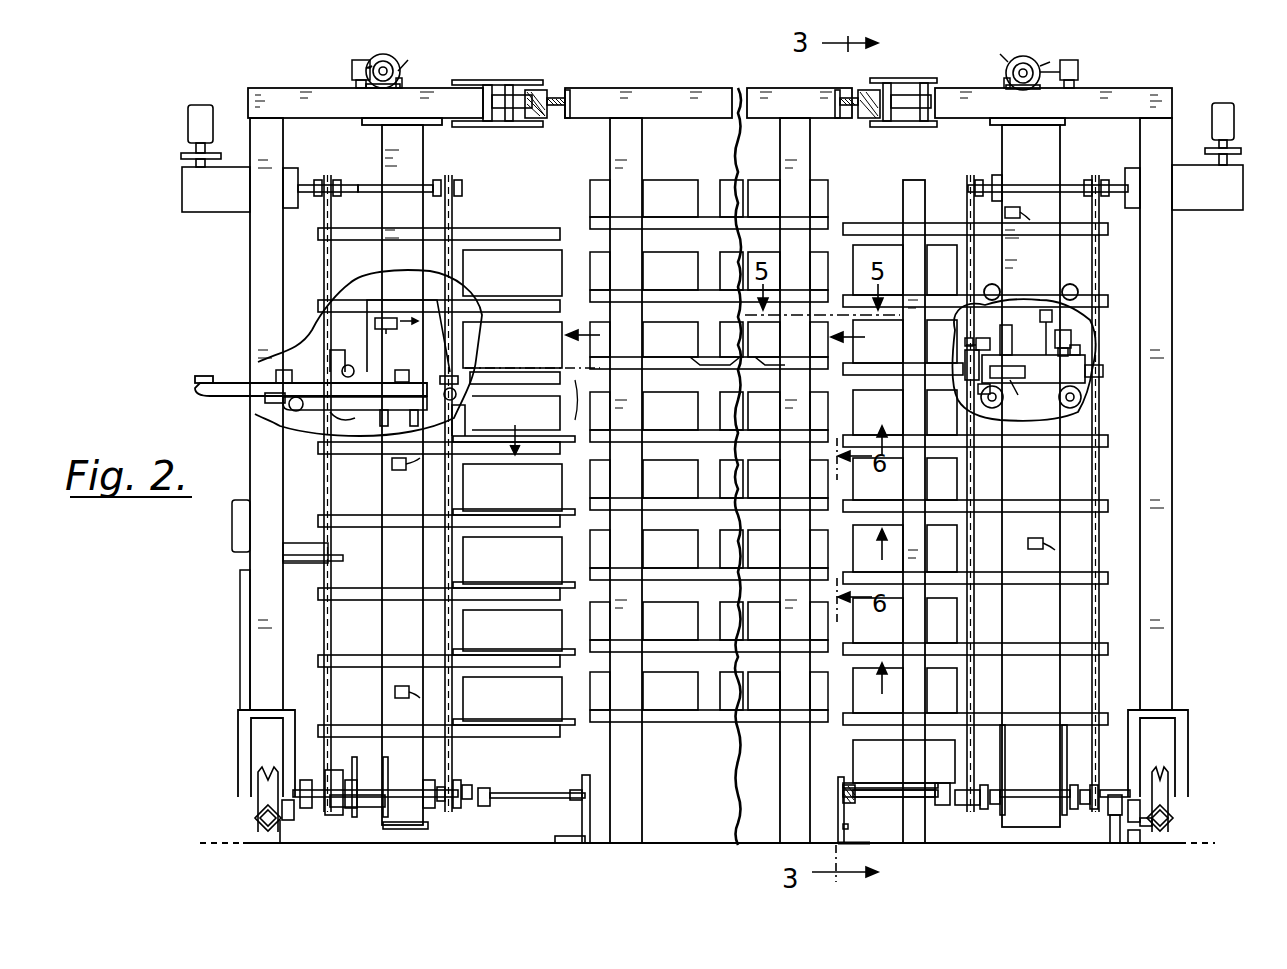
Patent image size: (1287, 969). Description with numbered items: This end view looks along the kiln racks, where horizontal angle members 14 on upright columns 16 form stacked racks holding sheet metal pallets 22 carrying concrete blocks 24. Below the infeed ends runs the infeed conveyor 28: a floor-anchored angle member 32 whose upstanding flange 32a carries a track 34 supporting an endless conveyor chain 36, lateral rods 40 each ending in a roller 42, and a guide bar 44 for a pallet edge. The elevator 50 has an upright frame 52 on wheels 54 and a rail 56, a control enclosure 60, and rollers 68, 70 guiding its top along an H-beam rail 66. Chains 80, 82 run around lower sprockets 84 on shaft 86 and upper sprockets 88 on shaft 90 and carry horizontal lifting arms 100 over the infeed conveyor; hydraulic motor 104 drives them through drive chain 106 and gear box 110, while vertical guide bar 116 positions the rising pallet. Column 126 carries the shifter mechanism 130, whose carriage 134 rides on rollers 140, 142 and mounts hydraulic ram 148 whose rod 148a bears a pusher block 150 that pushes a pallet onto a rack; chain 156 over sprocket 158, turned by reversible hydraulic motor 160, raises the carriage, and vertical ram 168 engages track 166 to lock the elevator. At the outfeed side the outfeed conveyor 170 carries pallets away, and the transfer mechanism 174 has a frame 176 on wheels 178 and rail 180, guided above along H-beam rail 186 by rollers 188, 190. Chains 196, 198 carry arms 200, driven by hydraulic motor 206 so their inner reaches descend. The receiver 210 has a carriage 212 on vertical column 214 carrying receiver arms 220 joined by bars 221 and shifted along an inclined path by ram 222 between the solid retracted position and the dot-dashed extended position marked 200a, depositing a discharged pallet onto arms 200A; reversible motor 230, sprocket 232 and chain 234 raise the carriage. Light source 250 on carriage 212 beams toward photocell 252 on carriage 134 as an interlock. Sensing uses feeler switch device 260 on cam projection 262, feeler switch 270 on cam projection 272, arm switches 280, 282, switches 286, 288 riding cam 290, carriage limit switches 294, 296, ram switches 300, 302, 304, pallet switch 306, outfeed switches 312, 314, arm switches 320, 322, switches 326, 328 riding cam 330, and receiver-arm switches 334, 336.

The angle members 14 is at (826, 217).
The upright columns 16 is at (642, 150).
The pallets 22 is at (712, 368).
The concrete blocks 24 is at (678, 344).
The infeed conveyor 28 is at (878, 848).
The angle member 32 is at (866, 842).
The upstanding flange 32a is at (840, 840).
The track 34 is at (851, 803).
The conveyor chain 36 is at (850, 785).
The rods 40 is at (900, 798).
The roller 42 is at (942, 805).
The guide bar 44 is at (838, 778).
The elevator 50 is at (1196, 76).
The upright frame 52 is at (1138, 90).
The wheels 54 is at (1168, 800).
The rail 56 is at (1172, 822).
The enclosure 60 is at (1176, 497).
The H-beam rail 66 is at (852, 96).
The rollers 68 is at (866, 90).
The rollers 70 is at (928, 83).
The chain 80 is at (968, 280).
The chain 82 is at (1100, 241).
The sprockets 84 is at (976, 805).
The shaft 86 is at (1058, 798).
The sprockets 88 is at (968, 175).
The shaft 90 is at (1028, 186).
The lifting arms 100 is at (952, 218).
The hydraulic motor 104 is at (1223, 104).
The drive chain 106 is at (1228, 150).
The gear box 110 is at (1240, 198).
The guide bar 116 is at (905, 200).
The column 126 is at (1052, 140).
The shifter mechanism 130 is at (1120, 351).
The carriage 134 is at (1080, 378).
The rollers 140 is at (990, 408).
The rollers 142 is at (1071, 408).
The hydraulic ram 148 is at (1033, 369).
The rod 148a is at (970, 378).
The pusher block 150 is at (978, 392).
The chain 156 is at (1005, 82).
The sprocket 158 is at (1010, 62).
The reversible hydraulic motor 160 is at (1020, 56).
The track 166 is at (1114, 843).
The hydraulic ram 168 is at (1112, 815).
The outfeed conveyor 170 is at (527, 832).
The transfer mechanism 174 is at (193, 266).
The upright frame 176 is at (298, 90).
The wheels 178 is at (258, 800).
The rail 180 is at (257, 822).
The H-beam rail 186 is at (560, 96).
The rollers 188 is at (546, 90).
The rollers 190 is at (490, 80).
The chain 196 is at (455, 203).
The chain 198 is at (323, 212).
The arms 200 is at (516, 240).
The shelf edge 200a is at (472, 344).
The arms 200A is at (490, 376).
The hydraulic motor 206 is at (198, 106).
The receiver 210 is at (325, 340).
The carriage 212 is at (378, 348).
The vertical column 214 is at (412, 155).
The receiver arm 220 is at (206, 397).
The bars 221 is at (207, 360).
The hydraulic ram 222 is at (343, 398).
The reversible hydraulic motor 230 is at (398, 56).
The sprocket 232 is at (372, 67).
The chain 234 is at (404, 78).
The light source 250 is at (403, 331).
The photocell 252 is at (1026, 332).
The feeler switch device 260 is at (1134, 822).
The cam projection 262 is at (1146, 826).
The feeler switch 270 is at (290, 816).
The cam projection 272 is at (285, 838).
The switch 280 is at (1018, 208).
The switch 282 is at (1038, 534).
The switch 286 is at (1078, 64).
The switch 288 is at (1078, 72).
The cam 290 is at (1040, 62).
The switch 294 is at (1010, 382).
The switch 296 is at (1018, 380).
The switch 300 is at (980, 338).
The switch 302 is at (1080, 348).
The switch 304 is at (1072, 338).
The switch actuator 306 is at (962, 348).
The switch 312 is at (460, 786).
The switch 314 is at (466, 805).
The switch 320 is at (399, 471).
The switch 322 is at (394, 688).
The switch 326 is at (352, 63).
The switch 328 is at (354, 70).
The cam 330 is at (408, 60).
The switch 334 is at (290, 370).
The switch 336 is at (402, 370).